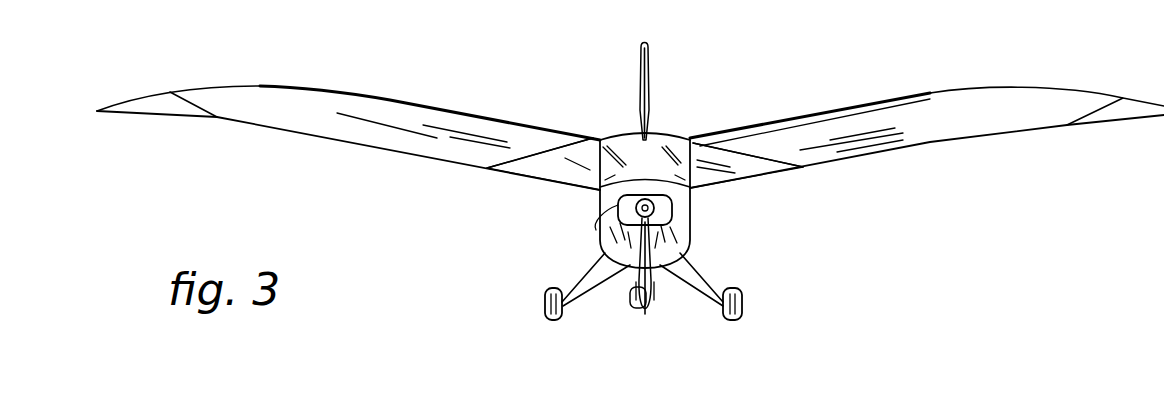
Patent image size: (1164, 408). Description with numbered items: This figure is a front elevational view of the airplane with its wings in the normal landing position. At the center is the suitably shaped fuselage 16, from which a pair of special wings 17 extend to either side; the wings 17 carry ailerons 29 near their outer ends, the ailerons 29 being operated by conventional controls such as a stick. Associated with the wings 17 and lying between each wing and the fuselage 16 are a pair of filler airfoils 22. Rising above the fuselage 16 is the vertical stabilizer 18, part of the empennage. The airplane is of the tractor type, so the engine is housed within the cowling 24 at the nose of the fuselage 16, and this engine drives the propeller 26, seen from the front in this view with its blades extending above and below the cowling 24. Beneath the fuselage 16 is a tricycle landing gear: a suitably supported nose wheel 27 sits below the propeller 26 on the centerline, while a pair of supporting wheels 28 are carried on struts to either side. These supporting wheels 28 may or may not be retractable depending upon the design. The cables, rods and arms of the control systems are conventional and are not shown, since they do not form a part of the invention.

The fuselage 16 is at (691, 229).
The wings 17 is at (400, 148).
The vertical stabilizer 18 is at (650, 76).
The filler airfoils 22 is at (563, 177).
The cowling 24 is at (618, 199).
The propeller 26 is at (653, 283).
The nose wheel 27 is at (638, 310).
The supporting wheels 28 is at (548, 294).
The ailerons 29 is at (148, 107).